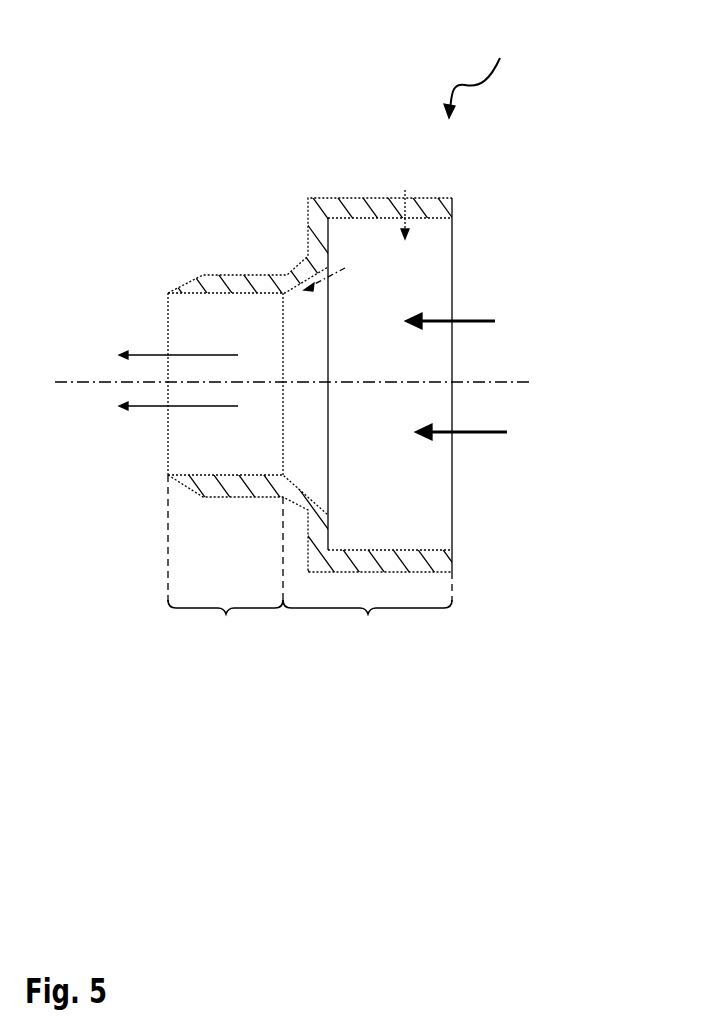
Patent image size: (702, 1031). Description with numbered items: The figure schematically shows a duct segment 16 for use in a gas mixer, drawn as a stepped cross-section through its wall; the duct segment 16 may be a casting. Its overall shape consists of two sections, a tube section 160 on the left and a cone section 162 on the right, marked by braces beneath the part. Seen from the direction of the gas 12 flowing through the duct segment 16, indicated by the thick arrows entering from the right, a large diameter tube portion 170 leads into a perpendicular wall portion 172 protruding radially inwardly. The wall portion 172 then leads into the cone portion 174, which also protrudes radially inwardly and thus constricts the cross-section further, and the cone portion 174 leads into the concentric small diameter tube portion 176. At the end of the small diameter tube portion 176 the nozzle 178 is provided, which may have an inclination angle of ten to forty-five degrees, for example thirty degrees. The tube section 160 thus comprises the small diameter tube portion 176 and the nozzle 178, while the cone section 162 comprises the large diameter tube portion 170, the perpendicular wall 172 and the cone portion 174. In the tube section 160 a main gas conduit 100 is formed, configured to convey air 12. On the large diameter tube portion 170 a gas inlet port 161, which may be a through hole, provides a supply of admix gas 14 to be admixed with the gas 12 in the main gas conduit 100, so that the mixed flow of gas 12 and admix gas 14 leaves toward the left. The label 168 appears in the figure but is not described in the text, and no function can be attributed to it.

The main gas conduit 100 is at (191, 339).
The gas 12 is at (468, 321).
The admix gas 14 is at (407, 187).
The duct segment 16 is at (478, 75).
The tube section 160 is at (225, 571).
The cone section 162 is at (367, 618).
The gas inlet port 161 is at (397, 197).
The transition region 168 is at (338, 92).
The large diameter tube portion 170 is at (362, 207).
The perpendicular wall portion 172 is at (316, 218).
The cone portion 174 is at (300, 273).
The small diameter tube portion 176 is at (247, 285).
The nozzle 178 is at (195, 293).